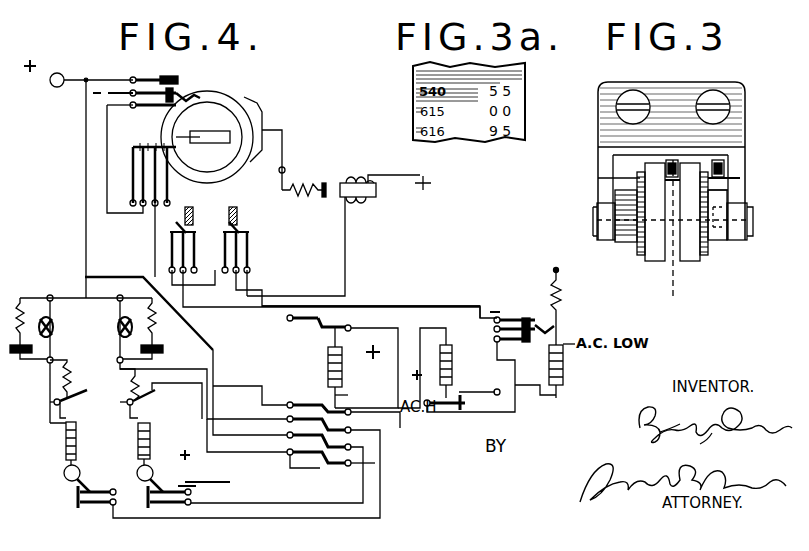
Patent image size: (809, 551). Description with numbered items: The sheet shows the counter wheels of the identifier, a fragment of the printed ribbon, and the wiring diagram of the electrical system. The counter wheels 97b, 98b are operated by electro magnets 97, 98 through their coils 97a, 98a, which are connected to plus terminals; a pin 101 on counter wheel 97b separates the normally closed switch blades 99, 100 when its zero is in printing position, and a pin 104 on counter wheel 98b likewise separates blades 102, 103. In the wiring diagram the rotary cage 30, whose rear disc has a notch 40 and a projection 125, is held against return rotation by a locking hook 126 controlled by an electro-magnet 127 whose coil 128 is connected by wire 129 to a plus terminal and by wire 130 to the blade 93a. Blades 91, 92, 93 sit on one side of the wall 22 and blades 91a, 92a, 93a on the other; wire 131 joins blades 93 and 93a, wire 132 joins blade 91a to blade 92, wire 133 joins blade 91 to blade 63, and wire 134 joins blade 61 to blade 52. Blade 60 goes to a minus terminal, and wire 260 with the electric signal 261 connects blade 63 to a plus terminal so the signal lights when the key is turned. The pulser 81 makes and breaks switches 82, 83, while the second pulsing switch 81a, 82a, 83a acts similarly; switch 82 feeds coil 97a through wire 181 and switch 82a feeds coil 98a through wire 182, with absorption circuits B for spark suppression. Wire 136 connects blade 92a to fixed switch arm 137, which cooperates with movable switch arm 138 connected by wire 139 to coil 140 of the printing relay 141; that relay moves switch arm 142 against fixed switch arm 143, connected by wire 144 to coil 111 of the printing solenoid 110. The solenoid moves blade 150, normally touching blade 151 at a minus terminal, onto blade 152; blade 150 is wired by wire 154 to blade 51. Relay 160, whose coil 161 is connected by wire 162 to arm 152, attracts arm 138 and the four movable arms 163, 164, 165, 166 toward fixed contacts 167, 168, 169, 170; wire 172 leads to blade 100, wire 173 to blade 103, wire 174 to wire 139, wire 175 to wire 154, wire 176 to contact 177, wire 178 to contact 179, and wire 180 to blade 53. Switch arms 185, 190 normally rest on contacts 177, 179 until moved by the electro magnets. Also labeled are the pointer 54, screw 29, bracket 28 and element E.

In FIG. 3, the wall 22 is at (660, 142).
In FIG. 3, the mounting bracket 28 is at (598, 178).
In FIG. 3, the screw 29 is at (743, 127).
In FIG. 4, the rotary cage 30 is at (254, 102).
In FIG. 3, the rotary cage 30 is at (730, 180).
In FIG. 4, the notch 40 is at (204, 102).
In FIG. 4, the blade 51 is at (178, 150).
In FIG. 4, the blade 52 is at (150, 175).
In FIG. 4, the blade 53 is at (172, 183).
In FIG. 4, the meter pointer 54 is at (210, 145).
In FIG. 4, the blade 60 is at (160, 70).
In FIG. 4, the blade 61 is at (158, 108).
In FIG. 4, the blade 63 is at (170, 80).
In FIG. 4, the cam or pulser 81 is at (54, 327).
In FIG. 4, the second pulsing switch rotary member 81a is at (118, 327).
In FIG. 4, the switch 82 is at (45, 363).
In FIG. 4, the switch 82a is at (116, 360).
In FIG. 4, the switch 83 is at (38, 297).
In FIG. 4, the switch 83a is at (113, 299).
In FIG. 4, the relay block B is at (86, 328).
In FIG. 4, the blade 91 is at (196, 250).
In FIG. 4, the blade 91a is at (246, 228).
In FIG. 4, the blade 92 is at (170, 252).
In FIG. 4, the blade 92a is at (252, 248).
In FIG. 4, the blade 93 is at (282, 190).
In FIG. 4, the blade 93a is at (200, 262).
In FIG. 4, the electro magnet 97 is at (66, 428).
In FIG. 4, the coil 97a is at (66, 448).
In FIG. 4, the counter wheel 97b is at (64, 473).
In FIG. 3, the counter wheel 97b is at (652, 266).
In FIG. 4, the electro magnet 98 is at (150, 448).
In FIG. 4, the coil 98a is at (150, 432).
In FIG. 4, the counter wheel 98b is at (160, 474).
In FIG. 3, the counter wheel 98b is at (692, 266).
In FIG. 4, the switch blade 99 is at (108, 486).
In FIG. 3, the switch blade 99 is at (674, 162).
In FIG. 4, the switch blade 100 is at (104, 506).
In FIG. 3, the switch blade 100 is at (690, 163).
In FIG. 3, the pin 101 is at (666, 237).
In FIG. 4, the blade 102 is at (200, 488).
In FIG. 3, the blade 102 is at (728, 153).
In FIG. 4, the blade 103 is at (182, 504).
In FIG. 3, the blade 103 is at (730, 177).
In FIG. 3, the pin 104 is at (720, 228).
In FIG. 4, the printing solenoid 110 is at (556, 380).
In FIG. 4, the coil 111 is at (556, 398).
In FIG. 4, the projection 125 is at (266, 108).
In FIG. 4, the locking hook 126 is at (284, 140).
In FIG. 4, the electro-magnet 127 is at (376, 195).
In FIG. 4, the coil 128 is at (348, 183).
In FIG. 4, the wire 129 is at (398, 168).
In FIG. 4, the wire 130 is at (345, 238).
In FIG. 4, the wire 131 is at (215, 308).
In FIG. 4, the wire 132 is at (215, 320).
In FIG. 4, the wire 133 is at (88, 285).
In FIG. 4, the wire 134 is at (107, 157).
In FIG. 4, the wire 136 is at (292, 322).
In FIG. 4, the fixed switch arm 137 is at (322, 329).
In FIG. 4, the movable switch arm 138 is at (340, 325).
In FIG. 4, the wire 139 is at (358, 330).
In FIG. 4, the coil 140 is at (452, 364).
In FIG. 4, the printing relay 141 is at (443, 344).
In FIG. 4, the movable switch arm 142 is at (456, 410).
In FIG. 4, the fixed switch arm 143 is at (460, 395).
In FIG. 4, the wire 144 is at (532, 400).
In FIG. 4, the blade 150 is at (555, 326).
In FIG. 4, the blade 151 is at (503, 318).
In FIG. 4, the blade 152 is at (524, 343).
In FIG. 4, the wire 154 is at (470, 298).
In FIG. 4, the relay 160 is at (326, 368).
In FIG. 4, the coil 161 is at (326, 358).
In FIG. 4, the wire 162 is at (348, 395).
In FIG. 4, the movable switch arm 163 is at (352, 415).
In FIG. 4, the movable switch arm 164 is at (352, 432).
In FIG. 4, the movable switch arm 165 is at (352, 449).
In FIG. 4, the movable switch arm 166 is at (352, 465).
In FIG. 4, the fixed contact 167 is at (287, 403).
In FIG. 4, the fixed contact 168 is at (287, 418).
In FIG. 4, the fixed contact 169 is at (287, 434).
In FIG. 4, the fixed contact 170 is at (287, 451).
In FIG. 4, the wire 172 is at (300, 520).
In FIG. 4, the wire 173 is at (340, 470).
In FIG. 4, the wire 174 is at (418, 364).
In FIG. 4, the wire 175 is at (248, 412).
In FIG. 4, the wire 176 is at (158, 370).
In FIG. 4, the fixed contact 177 is at (70, 396).
In FIG. 4, the wire 178 is at (250, 450).
In FIG. 4, the fixed contact 179 is at (145, 390).
In FIG. 4, the wire 180 is at (270, 458).
In FIG. 4, the wire 181 is at (50, 393).
In FIG. 4, the wire 182 is at (80, 445).
In FIG. 4, the switch arm 185 is at (78, 418).
In FIG. 4, the switch arm 190 is at (140, 402).
In FIG. 4, the wire 260 is at (72, 78).
In FIG. 4, the electric light or signal 261 is at (52, 88).
In FIG. 3, the escapement E is at (730, 175).